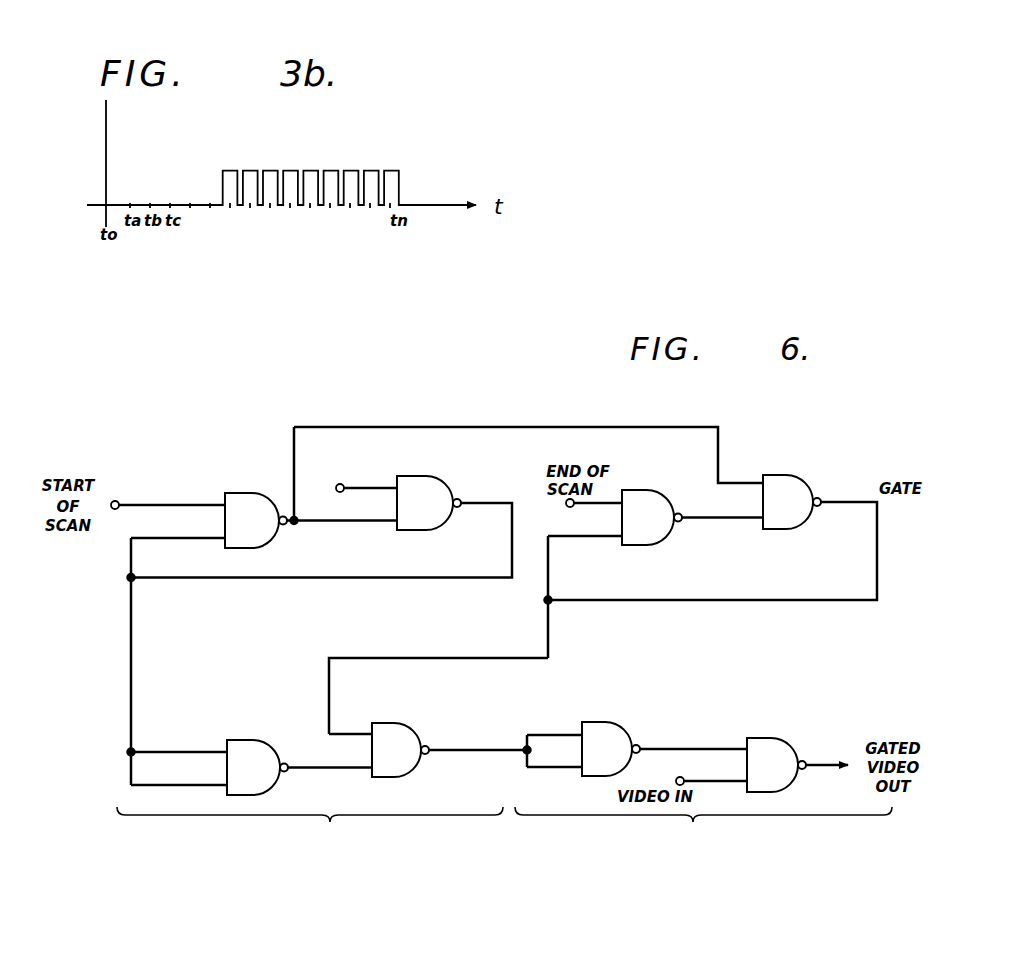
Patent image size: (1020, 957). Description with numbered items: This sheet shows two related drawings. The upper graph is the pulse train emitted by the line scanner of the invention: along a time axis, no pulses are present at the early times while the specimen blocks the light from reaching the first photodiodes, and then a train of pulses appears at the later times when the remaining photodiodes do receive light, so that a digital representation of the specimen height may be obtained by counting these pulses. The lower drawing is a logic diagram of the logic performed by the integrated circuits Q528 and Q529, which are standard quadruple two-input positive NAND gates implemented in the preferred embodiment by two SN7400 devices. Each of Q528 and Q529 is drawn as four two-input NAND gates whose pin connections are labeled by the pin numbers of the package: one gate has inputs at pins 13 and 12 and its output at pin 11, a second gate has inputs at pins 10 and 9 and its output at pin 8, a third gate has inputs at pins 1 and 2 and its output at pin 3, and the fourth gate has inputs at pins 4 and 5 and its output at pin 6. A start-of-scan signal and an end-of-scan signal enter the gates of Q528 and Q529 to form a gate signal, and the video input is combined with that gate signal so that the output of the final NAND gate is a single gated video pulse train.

The NAND gate input pin 13 is at (369, 497).
The NAND gate input pin 12 is at (378, 651).
The NAND gate output pin 11 is at (525, 484).
The NAND gate input pin 10 is at (549, 479).
The NAND gate input pin 9 is at (567, 514).
The NAND gate output pin 8 is at (503, 543).
The NAND gate input pin 1 is at (355, 741).
The NAND gate input pin 2 is at (356, 767).
The NAND gate output pin 3 is at (517, 750).
The NAND gate input pin 4 is at (536, 704).
The NAND gate input pin 5 is at (551, 768).
The NAND gate output pin 6 is at (638, 751).
The integrated circuit Q528 is at (310, 828).
The integrated circuit Q529 is at (703, 829).